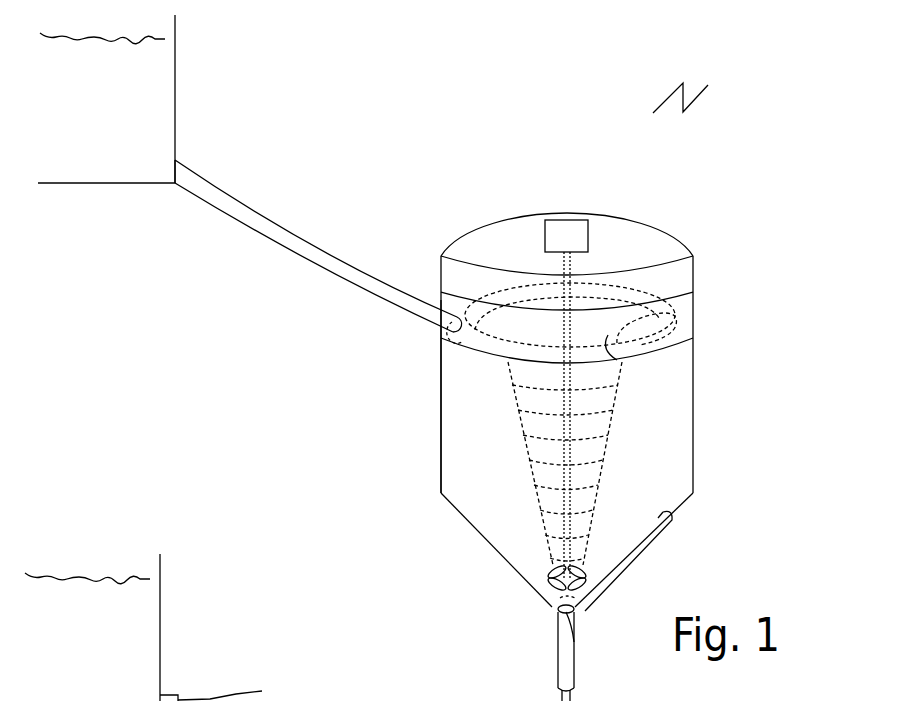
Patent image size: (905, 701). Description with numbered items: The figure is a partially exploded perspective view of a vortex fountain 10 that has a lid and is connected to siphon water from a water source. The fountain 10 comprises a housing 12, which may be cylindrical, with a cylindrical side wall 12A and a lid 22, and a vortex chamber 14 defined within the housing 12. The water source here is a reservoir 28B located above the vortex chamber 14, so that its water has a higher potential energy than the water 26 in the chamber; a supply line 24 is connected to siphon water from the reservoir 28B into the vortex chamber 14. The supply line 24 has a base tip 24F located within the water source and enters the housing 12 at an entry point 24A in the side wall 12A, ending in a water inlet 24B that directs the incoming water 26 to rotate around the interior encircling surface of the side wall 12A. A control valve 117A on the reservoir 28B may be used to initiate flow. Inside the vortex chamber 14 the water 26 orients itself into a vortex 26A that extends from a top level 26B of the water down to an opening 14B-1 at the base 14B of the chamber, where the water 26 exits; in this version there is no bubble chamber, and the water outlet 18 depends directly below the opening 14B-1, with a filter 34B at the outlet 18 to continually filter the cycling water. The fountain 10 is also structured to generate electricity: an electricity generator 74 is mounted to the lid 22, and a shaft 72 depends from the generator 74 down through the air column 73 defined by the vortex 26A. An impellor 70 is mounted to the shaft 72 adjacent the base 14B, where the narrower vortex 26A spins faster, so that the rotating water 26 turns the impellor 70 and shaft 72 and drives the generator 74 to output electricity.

The vortex fountain 10 is at (693, 87).
The housing 12 is at (693, 368).
The cylindrical side wall 12A is at (441, 423).
The vortex chamber 14 is at (680, 482).
The base of the vortex chamber 14B is at (672, 514).
The opening 14B-1 is at (566, 637).
The water outlet 18 is at (575, 645).
The lid 22 is at (632, 223).
The supply line 24 is at (300, 240).
The entry point 24A is at (463, 335).
The water inlet 24B is at (617, 343).
The base tip of the line 24F is at (175, 172).
The water 26 is at (122, 42).
The vortex 26A is at (528, 455).
The top level of water 26B is at (673, 332).
The reservoir 28B is at (176, 97).
The filter 34B is at (578, 606).
The impellor 70 is at (560, 580).
The shaft 72 is at (563, 512).
The air column 73 is at (582, 433).
The electricity generator 74 is at (543, 235).
The control valve 117A is at (248, 690).